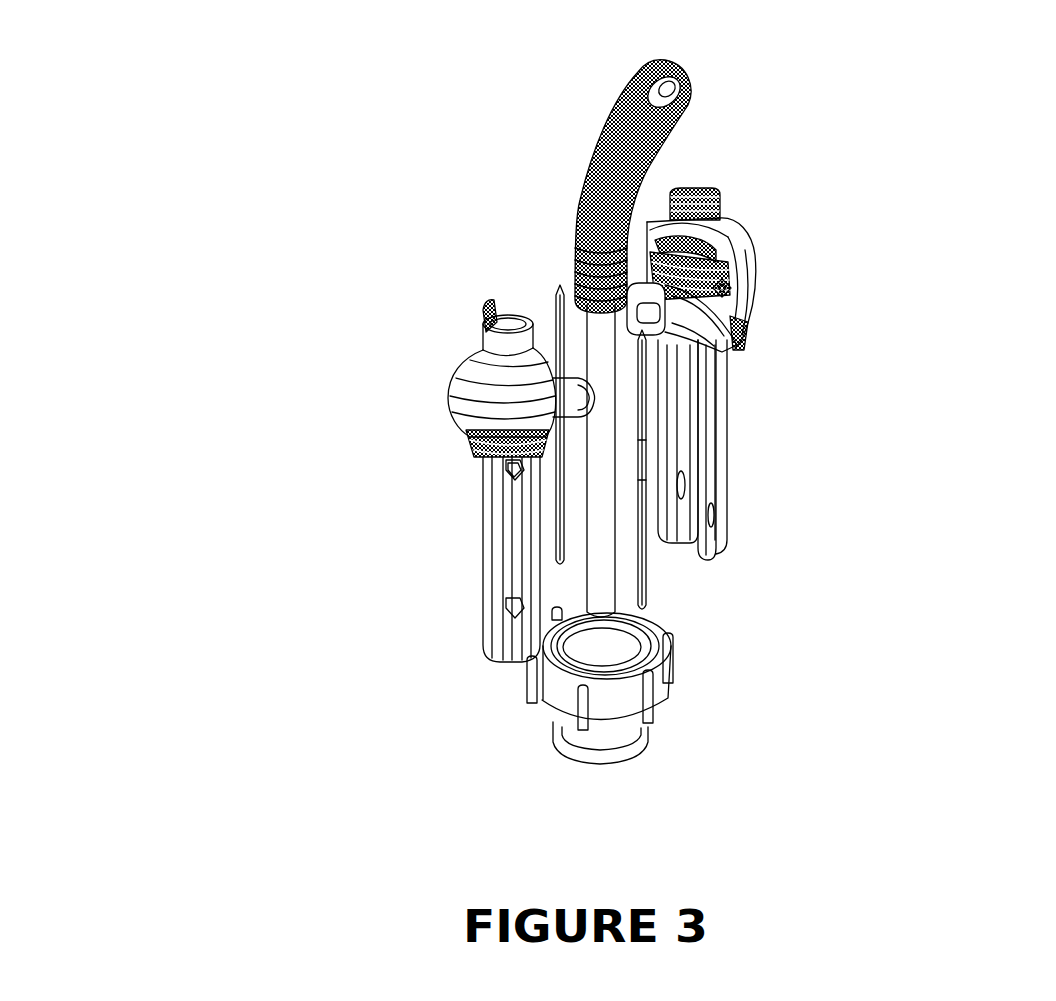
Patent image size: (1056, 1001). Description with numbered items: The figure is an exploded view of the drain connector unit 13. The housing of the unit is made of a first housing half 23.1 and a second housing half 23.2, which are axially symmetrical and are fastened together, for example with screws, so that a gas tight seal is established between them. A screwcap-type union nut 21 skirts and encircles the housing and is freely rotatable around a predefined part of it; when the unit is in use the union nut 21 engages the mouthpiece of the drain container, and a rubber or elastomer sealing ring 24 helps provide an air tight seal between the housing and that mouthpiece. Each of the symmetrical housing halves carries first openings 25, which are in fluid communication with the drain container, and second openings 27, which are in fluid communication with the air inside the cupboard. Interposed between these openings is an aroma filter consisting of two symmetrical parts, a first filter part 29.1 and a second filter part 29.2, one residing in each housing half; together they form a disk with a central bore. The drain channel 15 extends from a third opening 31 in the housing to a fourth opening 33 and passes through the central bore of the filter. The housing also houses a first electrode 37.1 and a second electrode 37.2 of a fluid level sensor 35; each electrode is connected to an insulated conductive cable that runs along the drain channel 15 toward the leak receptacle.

The drain connector unit 13 is at (213, 184).
The drain channel 15 is at (663, 92).
The union nut 21 is at (540, 703).
The first housing half 23.1 is at (732, 247).
The second housing half 23.2 is at (483, 332).
The sealing ring 24 is at (644, 753).
The first openings 25 is at (738, 330).
The second openings 27 is at (757, 273).
The first aroma filter part 29.1 is at (700, 345).
The second aroma filter part 29.2 is at (585, 410).
The third opening 31 is at (712, 190).
The fourth opening 33 is at (712, 547).
The fluid level sensor 35 is at (657, 574).
The first electrode 37.1 is at (647, 590).
The second electrode 37.2 is at (565, 535).